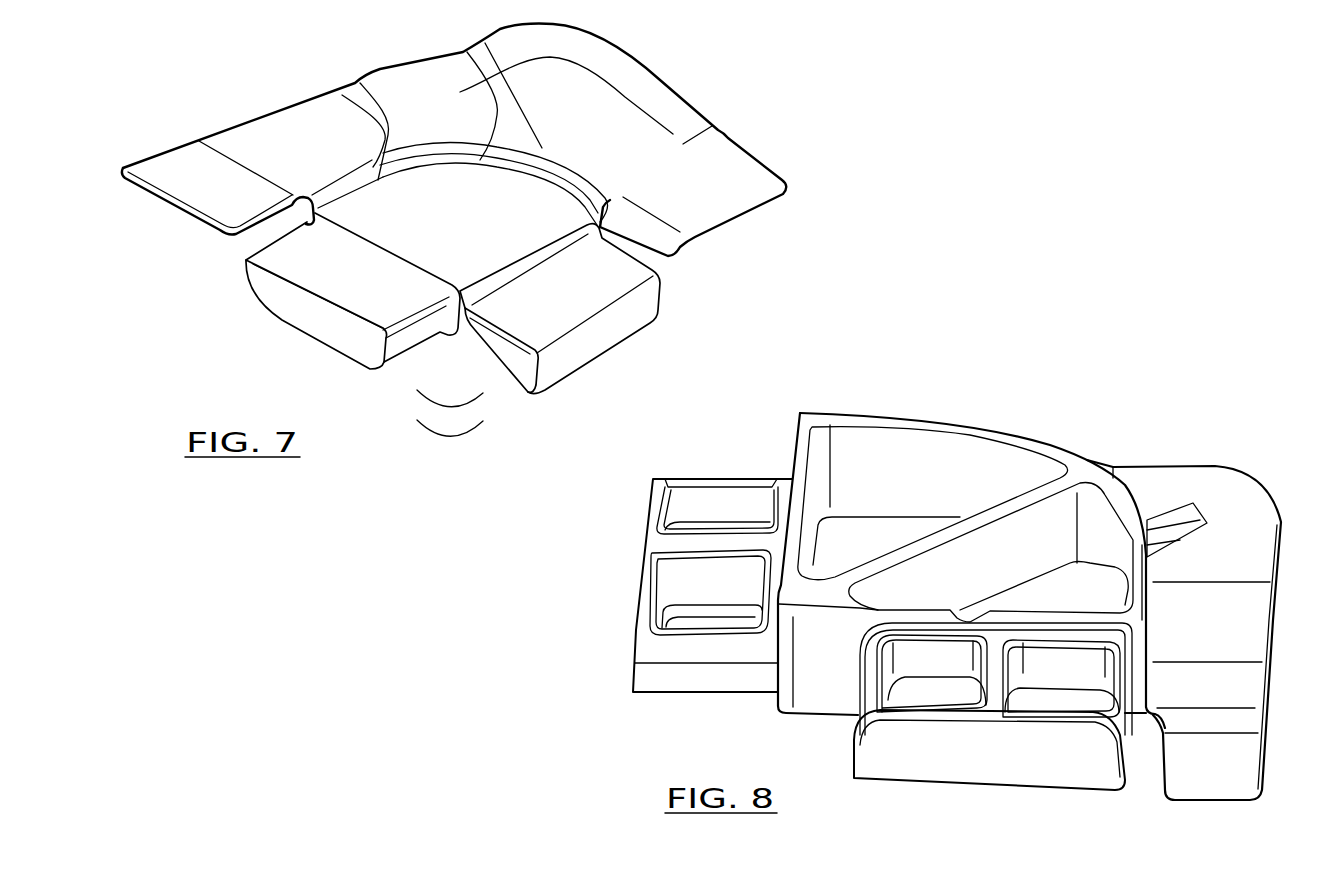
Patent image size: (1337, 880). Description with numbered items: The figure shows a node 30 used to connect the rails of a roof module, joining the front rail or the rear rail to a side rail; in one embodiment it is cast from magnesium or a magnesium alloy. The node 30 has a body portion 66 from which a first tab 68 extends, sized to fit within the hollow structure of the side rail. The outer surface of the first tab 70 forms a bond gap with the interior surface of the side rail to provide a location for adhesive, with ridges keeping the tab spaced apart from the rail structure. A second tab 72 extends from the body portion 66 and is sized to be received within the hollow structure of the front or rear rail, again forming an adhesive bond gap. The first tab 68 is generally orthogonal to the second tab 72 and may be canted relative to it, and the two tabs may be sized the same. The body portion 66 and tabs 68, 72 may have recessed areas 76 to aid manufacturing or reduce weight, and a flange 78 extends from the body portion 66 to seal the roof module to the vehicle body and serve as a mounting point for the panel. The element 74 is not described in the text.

In FIG. 7, the node 30 is at (840, 134).
In FIG. 8, the node 30 is at (1098, 394).
In FIG. 7, the body portion 66 is at (540, 212).
In FIG. 8, the body portion 66 is at (968, 447).
In FIG. 7, the first tab 68 is at (610, 328).
In FIG. 8, the first tab 68 is at (931, 750).
In FIG. 7, the outer surface of the first tab 70 is at (563, 300).
In FIG. 7, the second tab 72 is at (276, 306).
In FIG. 8, the second tab 72 is at (653, 648).
In FIG. 7, the duct top wall 74 is at (375, 293).
In FIG. 8, the recessed areas 76 is at (700, 503).
In FIG. 7, the flange 78 is at (683, 117).
In FIG. 8, the flange 78 is at (1228, 490).